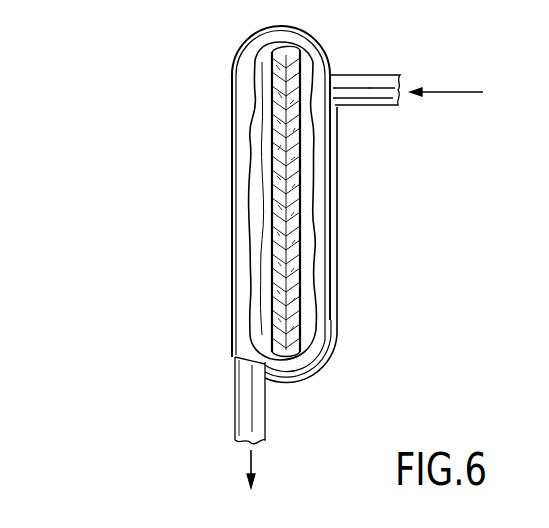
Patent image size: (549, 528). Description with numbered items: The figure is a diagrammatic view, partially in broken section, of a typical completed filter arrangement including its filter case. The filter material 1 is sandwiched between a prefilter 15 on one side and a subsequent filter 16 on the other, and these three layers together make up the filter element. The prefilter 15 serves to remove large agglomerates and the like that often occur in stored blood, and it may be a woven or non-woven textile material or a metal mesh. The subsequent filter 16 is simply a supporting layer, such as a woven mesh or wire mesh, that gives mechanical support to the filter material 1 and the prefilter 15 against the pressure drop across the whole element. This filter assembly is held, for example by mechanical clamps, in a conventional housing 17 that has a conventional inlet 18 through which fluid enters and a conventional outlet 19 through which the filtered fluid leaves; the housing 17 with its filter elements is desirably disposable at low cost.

The filter material 1 is at (297, 63).
The prefilter 15 is at (300, 220).
The subsequent filter 16 is at (253, 245).
The housing 17 is at (335, 143).
The inlet 18 is at (380, 82).
The outlet 19 is at (267, 423).